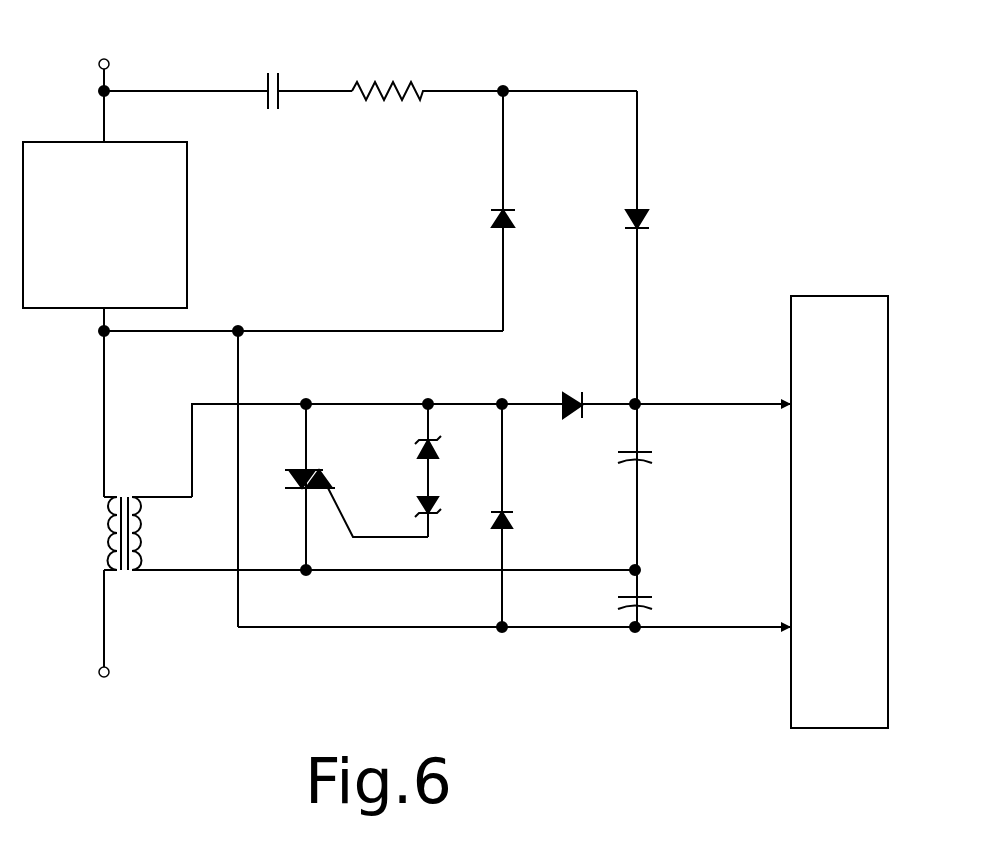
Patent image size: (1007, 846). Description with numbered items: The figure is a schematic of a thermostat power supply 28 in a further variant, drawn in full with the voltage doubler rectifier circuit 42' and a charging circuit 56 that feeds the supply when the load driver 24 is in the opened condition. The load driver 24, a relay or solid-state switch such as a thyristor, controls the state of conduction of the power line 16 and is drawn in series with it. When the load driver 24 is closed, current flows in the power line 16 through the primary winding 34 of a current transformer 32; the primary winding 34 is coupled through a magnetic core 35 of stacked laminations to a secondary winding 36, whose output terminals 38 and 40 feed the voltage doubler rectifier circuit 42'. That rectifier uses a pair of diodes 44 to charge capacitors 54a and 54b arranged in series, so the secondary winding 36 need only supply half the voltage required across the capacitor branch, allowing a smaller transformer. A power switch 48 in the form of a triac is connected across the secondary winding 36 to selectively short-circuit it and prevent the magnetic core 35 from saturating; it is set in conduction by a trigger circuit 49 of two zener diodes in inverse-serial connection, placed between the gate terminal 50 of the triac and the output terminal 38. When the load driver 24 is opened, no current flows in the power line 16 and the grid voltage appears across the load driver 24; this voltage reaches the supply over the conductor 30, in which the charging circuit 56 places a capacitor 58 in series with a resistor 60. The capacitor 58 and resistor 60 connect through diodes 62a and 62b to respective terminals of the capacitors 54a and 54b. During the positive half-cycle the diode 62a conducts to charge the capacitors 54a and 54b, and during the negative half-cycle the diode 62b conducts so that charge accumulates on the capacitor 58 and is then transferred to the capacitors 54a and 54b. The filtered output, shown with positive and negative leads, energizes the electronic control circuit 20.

The power line 16 is at (104, 97).
The electronic control circuit 20 is at (839, 512).
The load driver 24 is at (187, 236).
The power supply 28 is at (690, 250).
The conductor 30 is at (208, 90).
The current transformer 32 is at (205, 486).
The primary winding 34 is at (107, 541).
The magnetic core 35 is at (125, 497).
The secondary winding 36 is at (137, 500).
The output terminal 38 is at (360, 403).
The output terminal 40 is at (265, 572).
The voltage doubler rectifier circuit 42' is at (704, 538).
The diode 44 is at (563, 400).
The power switch 48 is at (287, 477).
The trigger circuit 49 is at (425, 433).
The gate terminal 50 is at (400, 540).
The capacitor 54a is at (636, 452).
The capacitor 54b is at (637, 597).
The charging circuit 56 is at (647, 78).
The capacitor 58 is at (280, 76).
The resistor 60 is at (382, 82).
The diode 62a is at (630, 218).
The diode 62b is at (497, 218).